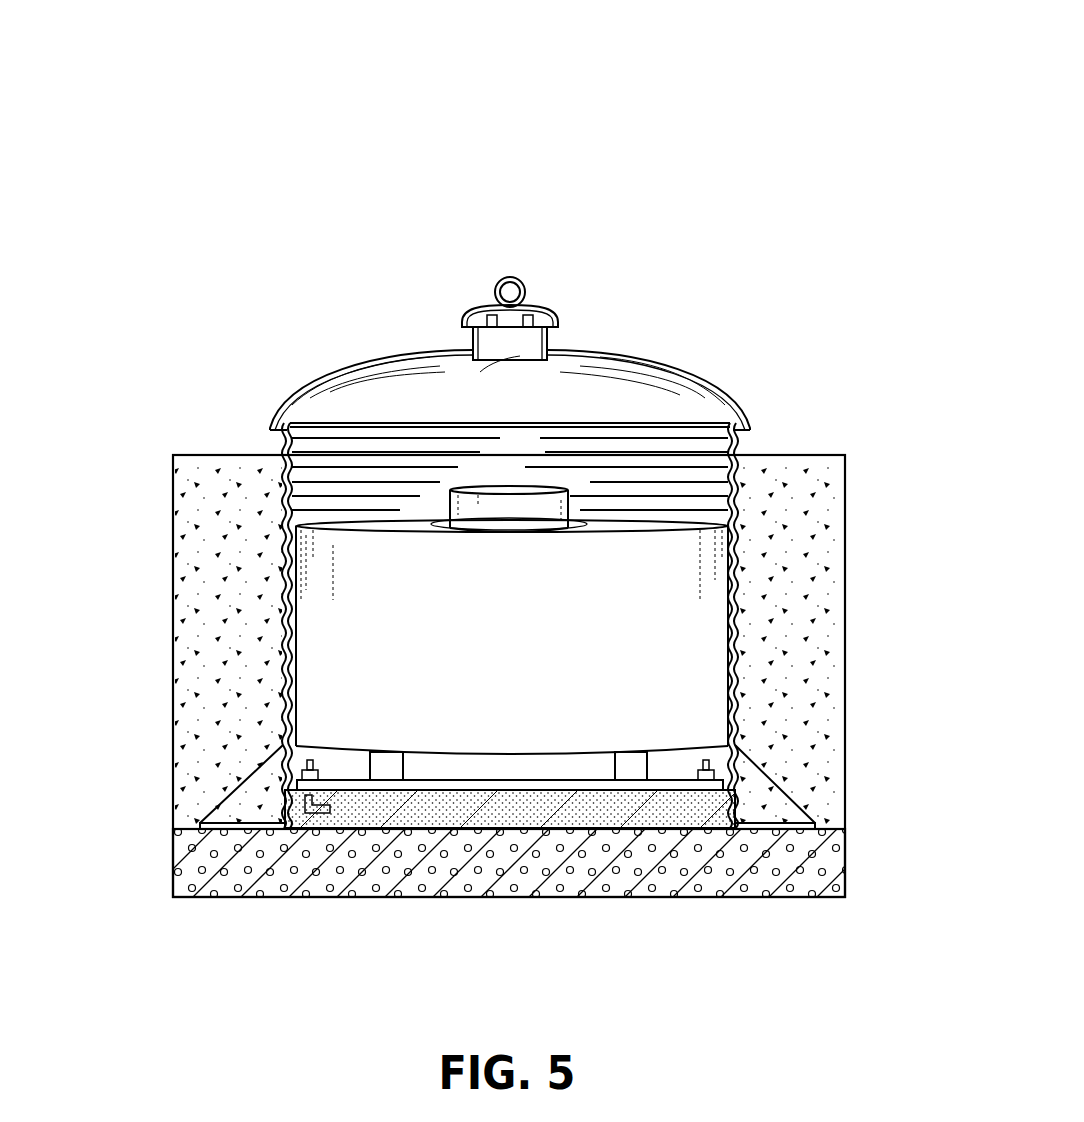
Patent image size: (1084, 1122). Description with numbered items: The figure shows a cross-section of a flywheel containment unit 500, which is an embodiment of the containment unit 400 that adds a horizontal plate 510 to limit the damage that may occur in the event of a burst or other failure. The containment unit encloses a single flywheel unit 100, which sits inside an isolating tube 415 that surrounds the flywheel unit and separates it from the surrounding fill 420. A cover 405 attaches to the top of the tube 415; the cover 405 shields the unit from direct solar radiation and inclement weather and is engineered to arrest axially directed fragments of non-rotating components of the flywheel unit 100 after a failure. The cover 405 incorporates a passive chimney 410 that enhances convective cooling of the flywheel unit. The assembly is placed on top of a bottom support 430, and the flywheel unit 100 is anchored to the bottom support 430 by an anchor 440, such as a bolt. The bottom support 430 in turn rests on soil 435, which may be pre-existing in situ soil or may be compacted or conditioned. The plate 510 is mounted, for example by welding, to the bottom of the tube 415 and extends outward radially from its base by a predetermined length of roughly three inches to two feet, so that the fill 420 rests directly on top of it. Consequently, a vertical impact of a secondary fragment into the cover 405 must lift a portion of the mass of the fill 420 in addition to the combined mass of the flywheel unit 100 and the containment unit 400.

The flywheel containment unit 500 is at (525, 35).
The containment unit 400 is at (597, 333).
The passive chimney 410 is at (480, 298).
The cover 405 is at (692, 382).
The isolating tube 415 is at (295, 441).
The fill 420 is at (240, 507).
The flywheel unit 100 is at (337, 604).
The anchor 440 is at (303, 765).
The bottom support 430 is at (297, 808).
The horizontal plate 510 is at (752, 810).
The soil 435 is at (240, 888).